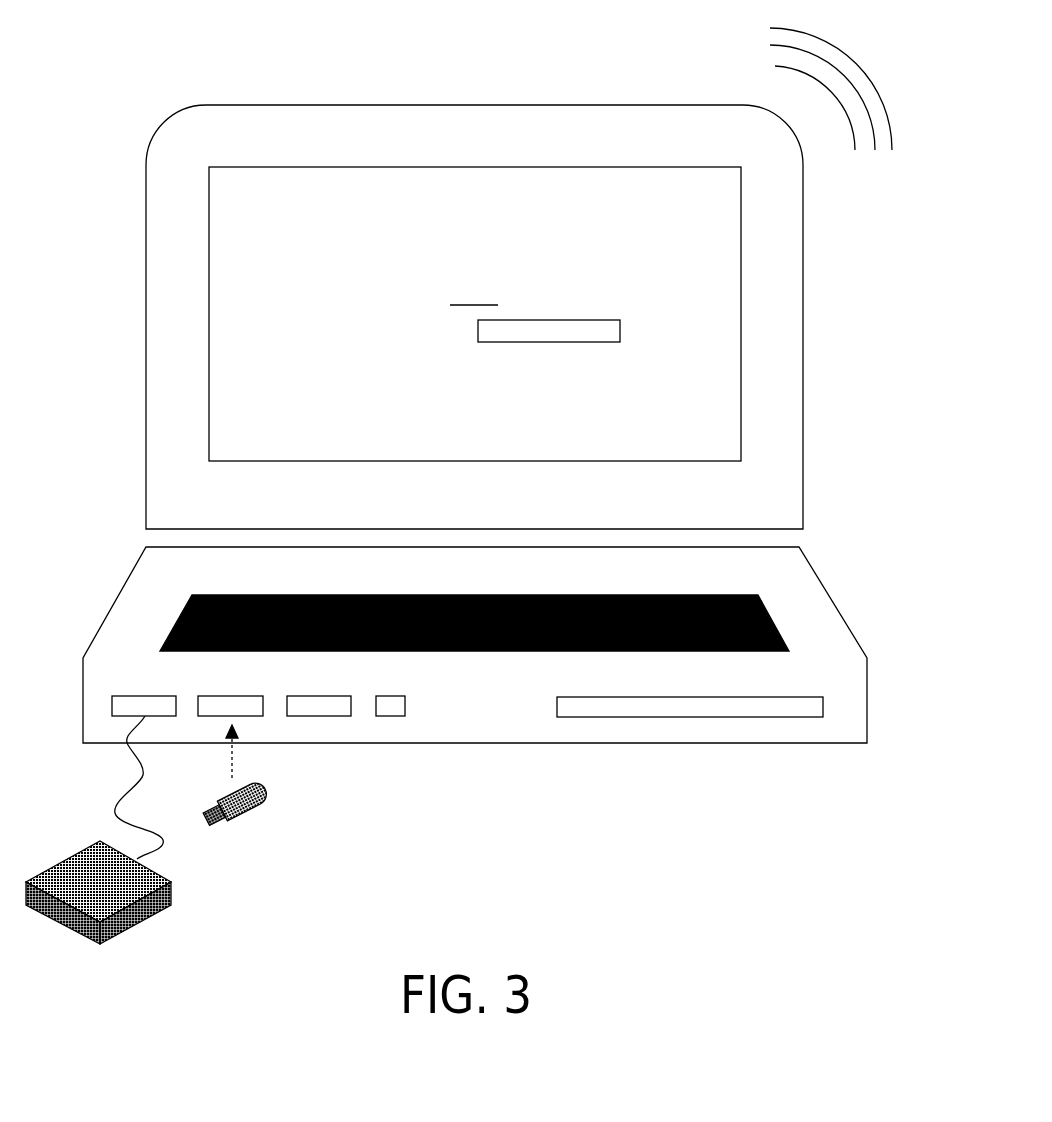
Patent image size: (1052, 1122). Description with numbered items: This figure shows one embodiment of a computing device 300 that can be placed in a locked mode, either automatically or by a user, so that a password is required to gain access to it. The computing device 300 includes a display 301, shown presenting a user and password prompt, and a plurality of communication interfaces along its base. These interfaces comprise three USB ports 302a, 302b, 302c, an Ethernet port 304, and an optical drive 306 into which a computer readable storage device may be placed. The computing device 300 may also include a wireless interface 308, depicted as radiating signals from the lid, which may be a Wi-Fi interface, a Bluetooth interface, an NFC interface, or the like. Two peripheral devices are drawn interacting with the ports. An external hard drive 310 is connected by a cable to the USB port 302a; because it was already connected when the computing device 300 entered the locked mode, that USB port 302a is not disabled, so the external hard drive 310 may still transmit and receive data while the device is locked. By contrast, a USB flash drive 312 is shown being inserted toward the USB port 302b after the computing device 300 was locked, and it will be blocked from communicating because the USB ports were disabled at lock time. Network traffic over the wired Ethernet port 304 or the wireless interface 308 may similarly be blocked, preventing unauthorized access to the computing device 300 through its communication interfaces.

The computing device 300 is at (135, 75).
The display 301 is at (493, 199).
The USB port 302a is at (160, 714).
The USB port 302b is at (247, 714).
The USB port 302c is at (336, 714).
The Ethernet port 304 is at (400, 717).
The optical drive 306 is at (690, 717).
The wireless interface 308 is at (857, 57).
The external hard drive 310 is at (173, 885).
The USB flash drive 312 is at (270, 803).